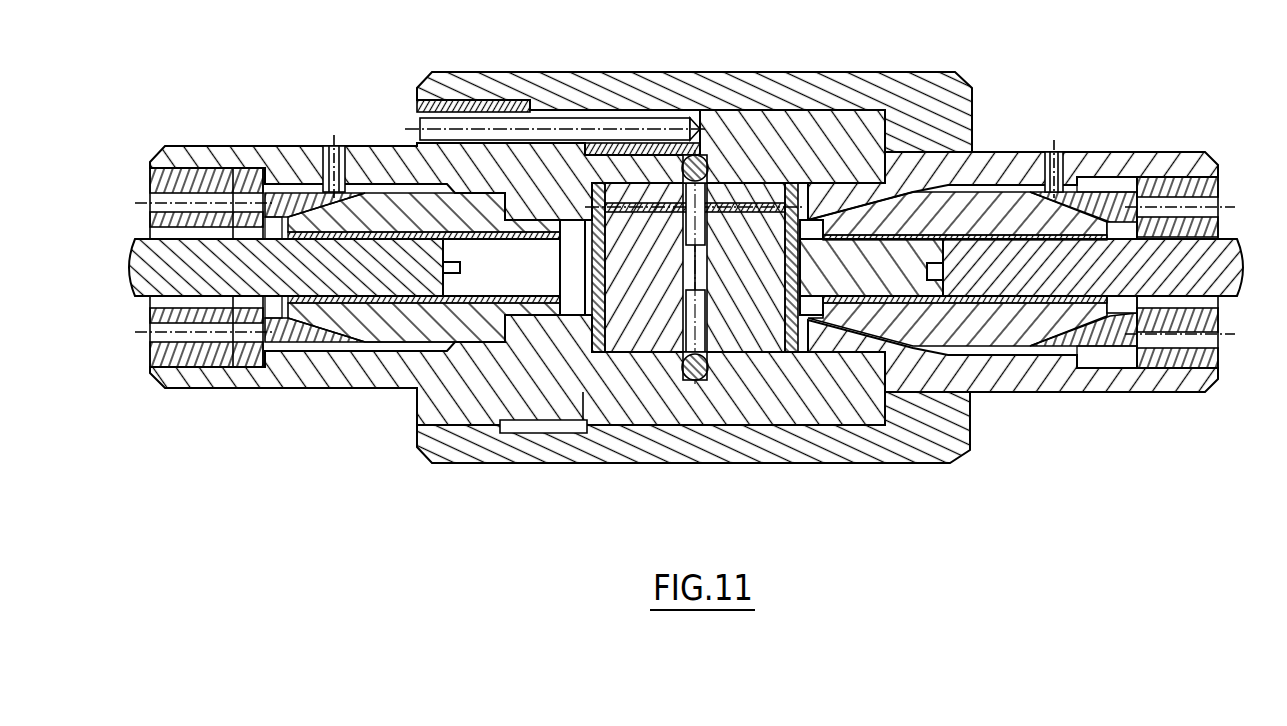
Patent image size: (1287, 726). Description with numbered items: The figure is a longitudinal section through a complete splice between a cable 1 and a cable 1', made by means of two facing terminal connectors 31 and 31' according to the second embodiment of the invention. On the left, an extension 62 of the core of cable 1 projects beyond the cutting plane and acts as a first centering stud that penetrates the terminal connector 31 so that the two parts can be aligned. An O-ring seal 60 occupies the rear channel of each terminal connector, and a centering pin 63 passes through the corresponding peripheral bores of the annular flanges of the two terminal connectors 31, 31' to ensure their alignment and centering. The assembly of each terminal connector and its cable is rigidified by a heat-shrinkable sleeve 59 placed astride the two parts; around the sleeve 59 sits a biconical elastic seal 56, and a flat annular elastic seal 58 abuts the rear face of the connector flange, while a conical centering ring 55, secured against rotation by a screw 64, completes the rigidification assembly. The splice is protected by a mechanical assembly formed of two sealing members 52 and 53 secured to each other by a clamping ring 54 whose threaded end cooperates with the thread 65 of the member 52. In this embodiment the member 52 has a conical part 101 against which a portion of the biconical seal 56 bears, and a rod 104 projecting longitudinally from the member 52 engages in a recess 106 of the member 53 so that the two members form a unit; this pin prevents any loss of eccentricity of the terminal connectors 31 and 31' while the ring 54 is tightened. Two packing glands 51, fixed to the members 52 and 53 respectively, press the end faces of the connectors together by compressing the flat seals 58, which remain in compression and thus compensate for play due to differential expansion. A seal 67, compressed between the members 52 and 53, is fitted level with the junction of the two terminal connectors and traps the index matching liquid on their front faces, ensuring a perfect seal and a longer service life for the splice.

The cable 1 is at (357, 267).
The cable 1' is at (1021, 267).
The terminal connector 31 is at (644, 267).
The terminal connector 31' is at (746, 267).
The packing gland 51 is at (152, 183).
The sealing member 52 is at (278, 153).
The sealing member 53 is at (1000, 165).
The clamping ring 54 is at (823, 100).
The conical centering ring 55 is at (316, 388).
The biconical elastic seal 56 is at (394, 389).
The flat annular elastic seal 58 is at (603, 392).
The heat-shrinkable sleeve 59 is at (403, 293).
The O-ring seal 60 is at (612, 290).
The extension of the cable core 62 is at (453, 277).
The centering pin 63 is at (738, 212).
The screw 64 is at (338, 146).
The thread 65 is at (515, 432).
The seal 67 is at (712, 160).
The conical part 101 is at (505, 335).
The rod 104 is at (547, 142).
The recess 106 is at (712, 150).